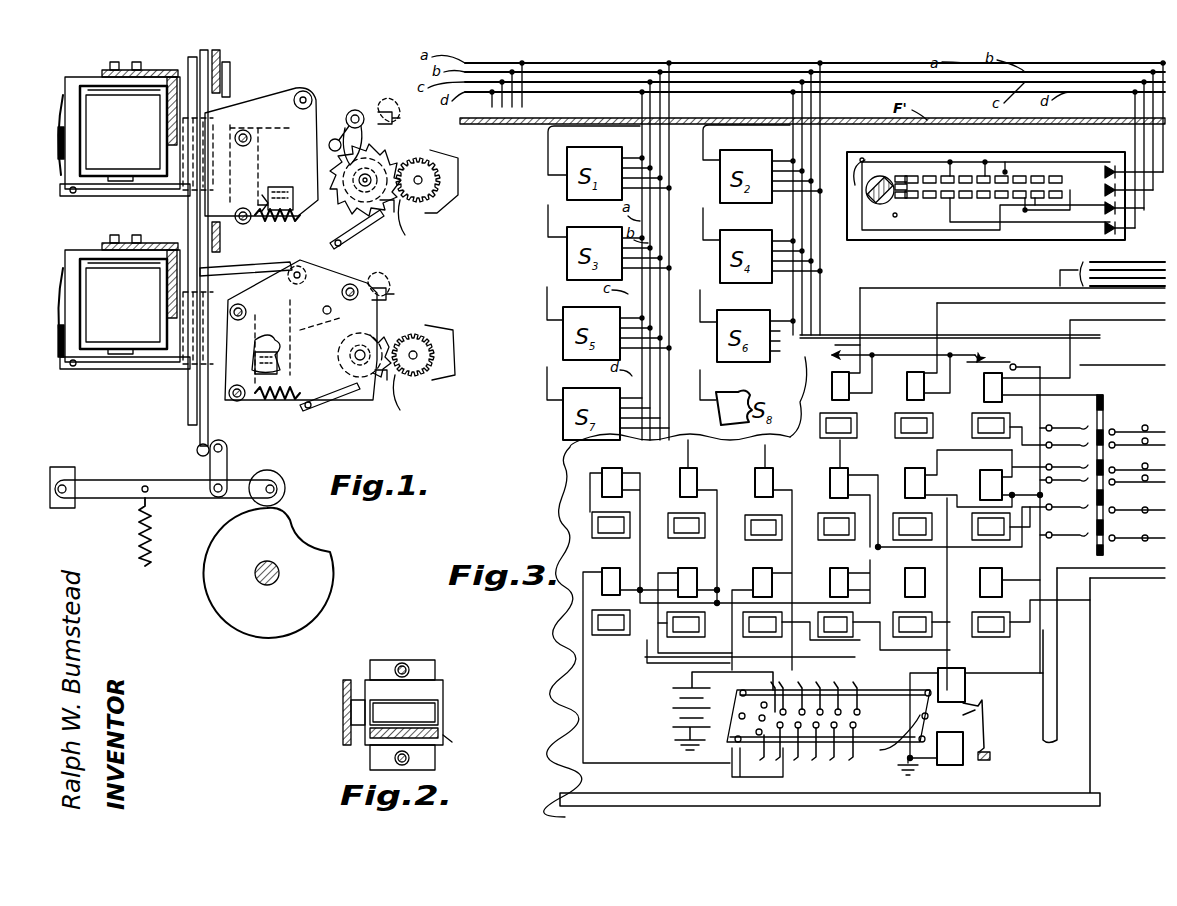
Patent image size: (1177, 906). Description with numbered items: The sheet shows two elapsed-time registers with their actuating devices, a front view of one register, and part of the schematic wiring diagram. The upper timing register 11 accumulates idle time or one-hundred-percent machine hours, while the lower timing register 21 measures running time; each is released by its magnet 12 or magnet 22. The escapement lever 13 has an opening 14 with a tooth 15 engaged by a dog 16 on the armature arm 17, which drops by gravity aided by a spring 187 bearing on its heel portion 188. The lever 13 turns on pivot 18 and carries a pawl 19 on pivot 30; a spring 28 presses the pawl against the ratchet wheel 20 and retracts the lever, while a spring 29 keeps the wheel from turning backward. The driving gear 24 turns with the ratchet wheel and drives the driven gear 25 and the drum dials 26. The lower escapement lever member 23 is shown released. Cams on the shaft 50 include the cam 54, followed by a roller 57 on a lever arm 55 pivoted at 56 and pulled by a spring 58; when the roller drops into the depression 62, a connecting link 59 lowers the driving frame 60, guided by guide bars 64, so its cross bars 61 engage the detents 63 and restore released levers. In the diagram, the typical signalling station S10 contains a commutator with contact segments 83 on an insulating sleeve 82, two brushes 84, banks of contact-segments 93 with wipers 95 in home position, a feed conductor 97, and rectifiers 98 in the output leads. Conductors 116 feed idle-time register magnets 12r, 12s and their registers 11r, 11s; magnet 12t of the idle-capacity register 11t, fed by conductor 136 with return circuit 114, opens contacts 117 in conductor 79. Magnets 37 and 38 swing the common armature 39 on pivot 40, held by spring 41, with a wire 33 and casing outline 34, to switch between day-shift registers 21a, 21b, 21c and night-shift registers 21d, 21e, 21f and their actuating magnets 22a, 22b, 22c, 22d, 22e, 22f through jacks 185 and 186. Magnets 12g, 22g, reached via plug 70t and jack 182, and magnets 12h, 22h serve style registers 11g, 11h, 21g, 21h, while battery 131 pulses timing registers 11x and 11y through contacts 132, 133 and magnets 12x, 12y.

In FIG. 1, the timing register 11 is at (433, 195).
In FIG. 2, the timing register 11 is at (404, 704).
In FIG. 1, the magnet 12 is at (122, 125).
In FIG. 1, the escapement lever 13 is at (261, 156).
In FIG. 1, the opening 14 is at (282, 187).
In FIG. 1, the tooth 15 is at (266, 195).
In FIG. 1, the dog 16 is at (268, 200).
In FIG. 1, the armature arm 17 is at (140, 198).
In FIG. 1, the pivot 18 is at (300, 91).
In FIG. 1, the pawl 19 is at (370, 228).
In FIG. 1, the ratchet wheel 20 is at (399, 320).
In FIG. 1, the timing register 21 is at (433, 329).
In FIG. 2, the timing register 21 is at (404, 704).
In FIG. 1, the magnet 22 is at (122, 298).
In FIG. 1, the escapement lever member 23 is at (380, 284).
In FIG. 1, the driving gear 24 is at (390, 110).
In FIG. 1, the driven gear 25 is at (440, 154).
In FIG. 2, the driven gear 25 is at (343, 698).
In FIG. 2, the drum dials 26 is at (458, 743).
In FIG. 1, the spring 28 is at (274, 222).
In FIG. 1, the spring 29 is at (355, 109).
In FIG. 1, the pivot 30 is at (337, 244).
In FIG. 3, the wire 33 is at (984, 676).
In FIG. 3, the frame 34 is at (1056, 715).
In FIG. 3, the magnet 37 is at (968, 688).
In FIG. 3, the magnet 38 is at (958, 763).
In FIG. 3, the common armature 39 is at (986, 715).
In FIG. 3, the pivot 40 is at (897, 775).
In FIG. 3, the spring 41 is at (985, 733).
In FIG. 1, the shaft 50 is at (257, 568).
In FIG. 1, the cam 54 is at (259, 573).
In FIG. 1, the lever arm 55 is at (182, 480).
In FIG. 1, the pivot 56 is at (60, 487).
In FIG. 1, the roller 57 is at (278, 477).
In FIG. 1, the spring 58 is at (134, 528).
In FIG. 1, the connecting link 59 is at (230, 460).
In FIG. 1, the register driving frame 60 is at (198, 430).
In FIG. 1, the horizontal cross bars 61 is at (198, 70).
In FIG. 1, the depression 62 is at (296, 537).
In FIG. 1, the detents 63 is at (252, 112).
In FIG. 1, the guide bars 64 is at (228, 74).
In FIG. 3, the conductor 79 is at (1042, 420).
In FIG. 3, the sleeve 82 is at (898, 179).
In FIG. 3, the contact segments 83 is at (880, 202).
In FIG. 3, the brushes 84 is at (845, 172).
In FIG. 3, the contact-segments 93 is at (950, 175).
In FIG. 3, the wipers 95 is at (925, 203).
In FIG. 3, the conductor 97 is at (910, 162).
In FIG. 3, the metal-oxide rectifiers 98 is at (1105, 166).
In FIG. 3, the return circuit 114 is at (1070, 333).
In FIG. 3, the conductors 116 is at (995, 288).
In FIG. 3, the contacts 117 is at (1002, 368).
In FIG. 3, the battery 131 is at (679, 700).
In FIG. 3, the contacts 132 is at (805, 673).
In FIG. 3, the contacts 133 is at (758, 767).
In FIG. 3, the conductor 136 is at (1150, 364).
In FIG. 3, the jack 182 is at (1152, 412).
In FIG. 3, the jack 185 is at (1131, 493).
In FIG. 3, the jack 186 is at (1131, 520).
In FIG. 1, the spring 187 is at (59, 150).
In FIG. 1, the heel portion 188 is at (59, 162).
In FIG. 3, the plug 70t is at (1150, 422).
In FIG. 3, the idle-time register magnet 12r is at (832, 384).
In FIG. 3, the idle-time register magnet 12s is at (907, 383).
In FIG. 3, the actuating magnet 12t is at (984, 383).
In FIG. 3, the counter 11r is at (820, 430).
In FIG. 3, the counter 11s is at (895, 430).
In FIG. 3, the idle-time register 11t is at (972, 430).
In FIG. 3, the magnet 12g is at (914, 472).
In FIG. 3, the magnet 12h is at (980, 480).
In FIG. 3, the register 11g is at (900, 515).
In FIG. 3, the register 11h is at (972, 527).
In FIG. 3, the register-actuating magnet 12x is at (602, 480).
In FIG. 3, the register-actuating magnet 12y is at (610, 578).
In FIG. 3, the timing register 11x is at (605, 525).
In FIG. 3, the timing register 11y is at (605, 625).
In FIG. 3, the register 21a is at (679, 505).
In FIG. 3, the running-time register 21b is at (752, 509).
In FIG. 3, the register 21c is at (815, 505).
In FIG. 3, the register 21d is at (685, 623).
In FIG. 3, the register 21e is at (760, 620).
In FIG. 3, the register 21f is at (832, 622).
In FIG. 3, the register 21g is at (913, 632).
In FIG. 3, the register 21h is at (1004, 626).
In FIG. 3, the relay 22a is at (690, 465).
In FIG. 3, the relay 22b is at (762, 468).
In FIG. 3, the relay 22c is at (830, 473).
In FIG. 3, the relay 22d is at (684, 578).
In FIG. 3, the relay 22e is at (760, 575).
In FIG. 3, the relay 22f is at (835, 569).
In FIG. 3, the magnet 22g is at (920, 594).
In FIG. 3, the magnet 22h is at (980, 578).
In FIG. 3, the signalling station S10 is at (994, 205).